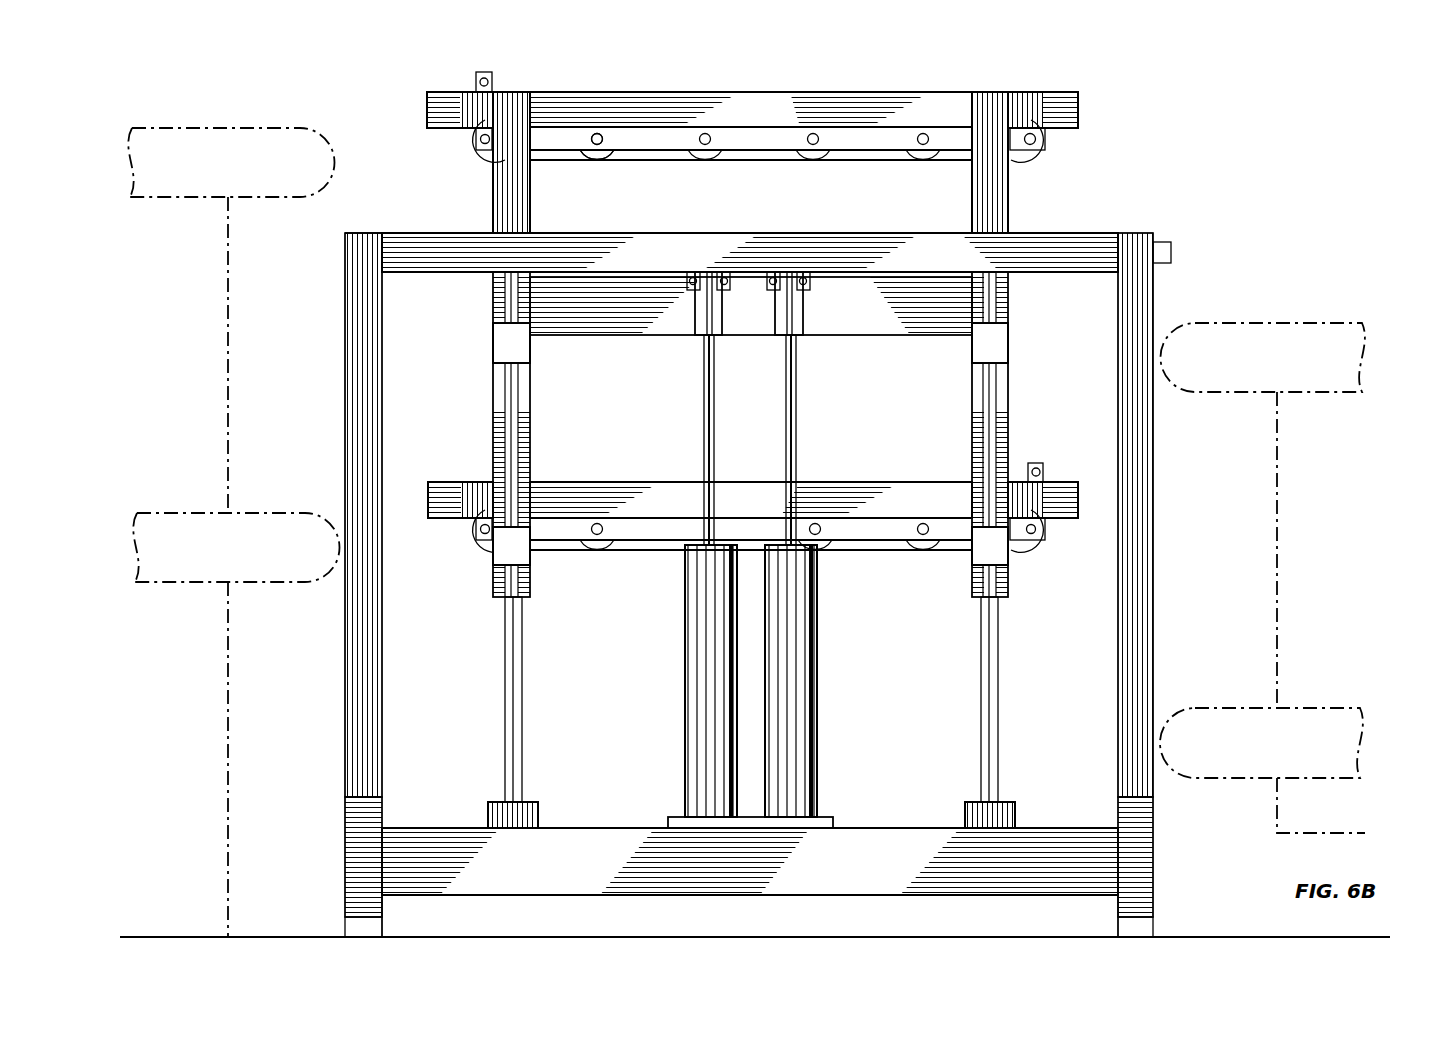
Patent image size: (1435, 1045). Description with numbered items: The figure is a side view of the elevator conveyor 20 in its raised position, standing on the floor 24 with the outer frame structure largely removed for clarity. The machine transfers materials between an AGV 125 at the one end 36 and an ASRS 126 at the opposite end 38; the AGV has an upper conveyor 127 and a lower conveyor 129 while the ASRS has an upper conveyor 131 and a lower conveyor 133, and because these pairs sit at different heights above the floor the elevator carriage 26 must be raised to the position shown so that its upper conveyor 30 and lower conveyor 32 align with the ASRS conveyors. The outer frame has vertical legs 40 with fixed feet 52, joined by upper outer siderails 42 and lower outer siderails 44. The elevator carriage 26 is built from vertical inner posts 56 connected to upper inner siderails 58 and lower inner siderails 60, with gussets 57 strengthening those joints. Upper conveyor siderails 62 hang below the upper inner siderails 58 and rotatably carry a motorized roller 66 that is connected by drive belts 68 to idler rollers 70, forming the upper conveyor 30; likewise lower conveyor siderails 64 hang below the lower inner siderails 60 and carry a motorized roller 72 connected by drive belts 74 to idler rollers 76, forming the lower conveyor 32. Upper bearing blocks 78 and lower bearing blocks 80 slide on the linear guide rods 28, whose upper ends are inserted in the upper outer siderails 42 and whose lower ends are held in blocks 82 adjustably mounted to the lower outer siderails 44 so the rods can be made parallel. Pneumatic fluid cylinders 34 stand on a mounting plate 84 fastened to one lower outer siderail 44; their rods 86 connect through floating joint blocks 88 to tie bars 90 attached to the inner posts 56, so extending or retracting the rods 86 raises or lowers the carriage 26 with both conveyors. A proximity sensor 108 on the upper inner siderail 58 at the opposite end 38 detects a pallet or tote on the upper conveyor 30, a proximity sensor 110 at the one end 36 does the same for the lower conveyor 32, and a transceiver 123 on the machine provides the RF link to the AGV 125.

The elevator conveyor 20 is at (1358, 136).
The floor 24 is at (288, 936).
The elevator carriage 26 is at (743, 334).
The linear guide rods 28 is at (504, 672).
The upper conveyor 30 is at (1081, 134).
The lower conveyor 32 is at (808, 511).
The pneumatic fluid cylinders 34 is at (806, 654).
The one end 36 is at (752, 570).
The opposite end 38 is at (334, 276).
The vertical legs 40 is at (348, 646).
The upper outer siderails 42 is at (626, 265).
The lower outer siderails 44 is at (611, 868).
The fixed feet 52 is at (355, 833).
The vertical inner posts 56 is at (1000, 224).
The gussets 57 is at (475, 118).
The upper inner siderails 58 is at (724, 118).
The lower inner siderails 60 is at (625, 484).
The upper conveyor siderails 62 is at (667, 134).
The lower conveyor siderails 64 is at (660, 539).
The motorized roller 66 is at (478, 160).
The drive belts 68 is at (566, 162).
The idler rollers 70 is at (706, 160).
The motorized roller 72 is at (475, 535).
The drive belts 74 is at (880, 552).
The idler rollers 76 is at (596, 550).
The upper bearing blocks 78 is at (498, 348).
The lower bearing blocks 80 is at (494, 566).
The blocks 82 is at (488, 812).
The mounting plate 84 is at (826, 820).
The rods 86 is at (704, 401).
The floating joint blocks 88 is at (780, 314).
The tie bars 90 is at (868, 320).
The proximity sensor 108 is at (472, 84).
The proximity sensor 110 is at (1040, 467).
The transceiver 123 is at (1161, 244).
The AGV 125 is at (1268, 604).
The ASRS 126 is at (230, 403).
The upper conveyor 127 is at (1278, 322).
The lower conveyor 129 is at (1316, 706).
The upper conveyor 131 is at (154, 197).
The lower conveyor 133 is at (174, 582).